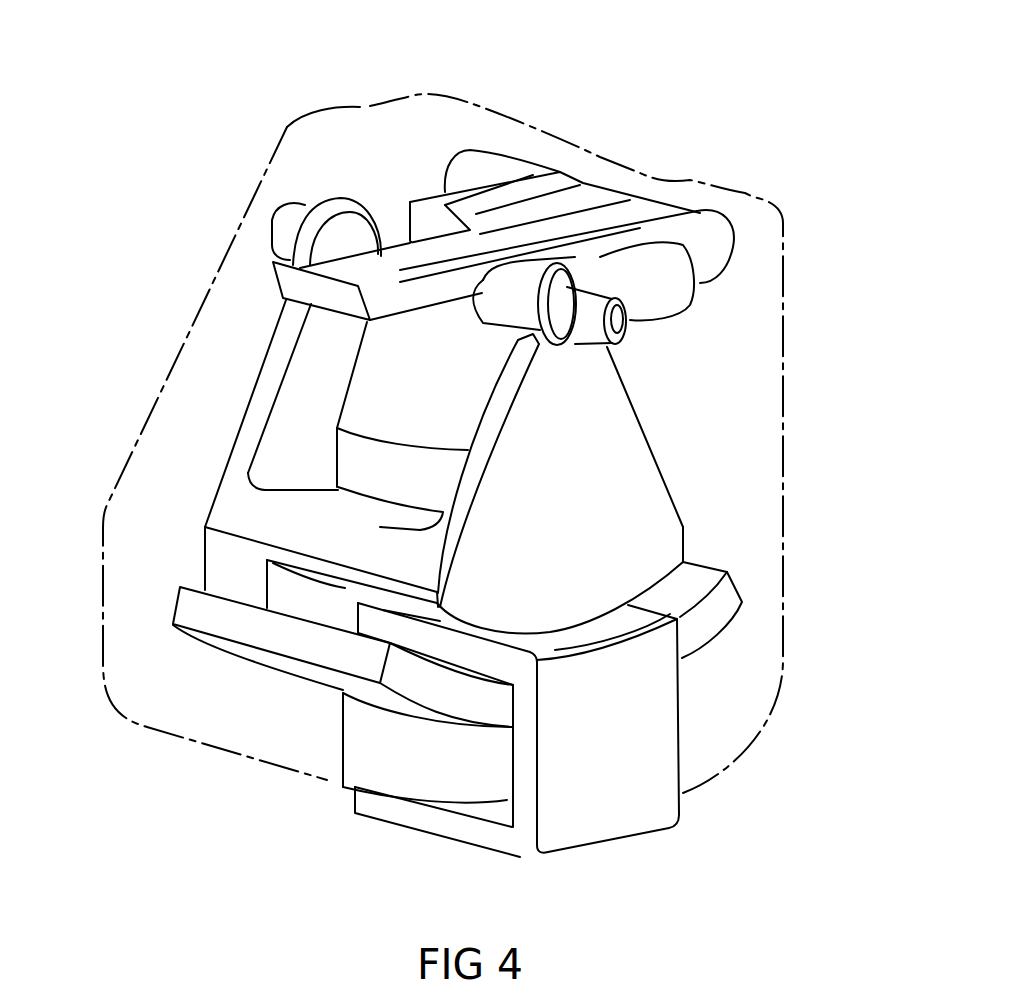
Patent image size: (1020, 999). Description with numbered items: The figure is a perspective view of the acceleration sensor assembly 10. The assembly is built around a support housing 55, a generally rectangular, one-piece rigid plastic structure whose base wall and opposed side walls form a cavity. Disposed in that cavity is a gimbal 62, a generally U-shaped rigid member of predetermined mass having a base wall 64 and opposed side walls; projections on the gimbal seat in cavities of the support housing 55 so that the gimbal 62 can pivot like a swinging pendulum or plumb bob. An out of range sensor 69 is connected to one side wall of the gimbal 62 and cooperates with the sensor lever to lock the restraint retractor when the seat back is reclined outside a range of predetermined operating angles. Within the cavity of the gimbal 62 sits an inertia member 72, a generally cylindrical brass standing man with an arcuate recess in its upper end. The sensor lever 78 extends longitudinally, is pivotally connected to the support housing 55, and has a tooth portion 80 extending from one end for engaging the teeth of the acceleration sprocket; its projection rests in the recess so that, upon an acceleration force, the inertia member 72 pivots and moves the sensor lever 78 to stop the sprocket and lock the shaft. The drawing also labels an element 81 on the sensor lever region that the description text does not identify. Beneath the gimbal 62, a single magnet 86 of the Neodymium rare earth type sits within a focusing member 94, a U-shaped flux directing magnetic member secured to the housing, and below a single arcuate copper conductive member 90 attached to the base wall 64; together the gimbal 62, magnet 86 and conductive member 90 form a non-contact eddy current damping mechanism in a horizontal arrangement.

The acceleration sensor assembly 10 is at (633, 104).
The support housing 55 is at (785, 398).
The gimbal 62 is at (627, 517).
The base wall 64 is at (220, 555).
The out of range sensor 69 is at (523, 283).
The inertia member 72 is at (370, 392).
The sensor lever 78 is at (405, 262).
The tooth portion 80 is at (290, 283).
The Z bracket plate 81 is at (477, 170).
The magnet 86 is at (370, 753).
The conductive member 90 is at (197, 607).
The focusing member 94 is at (633, 793).